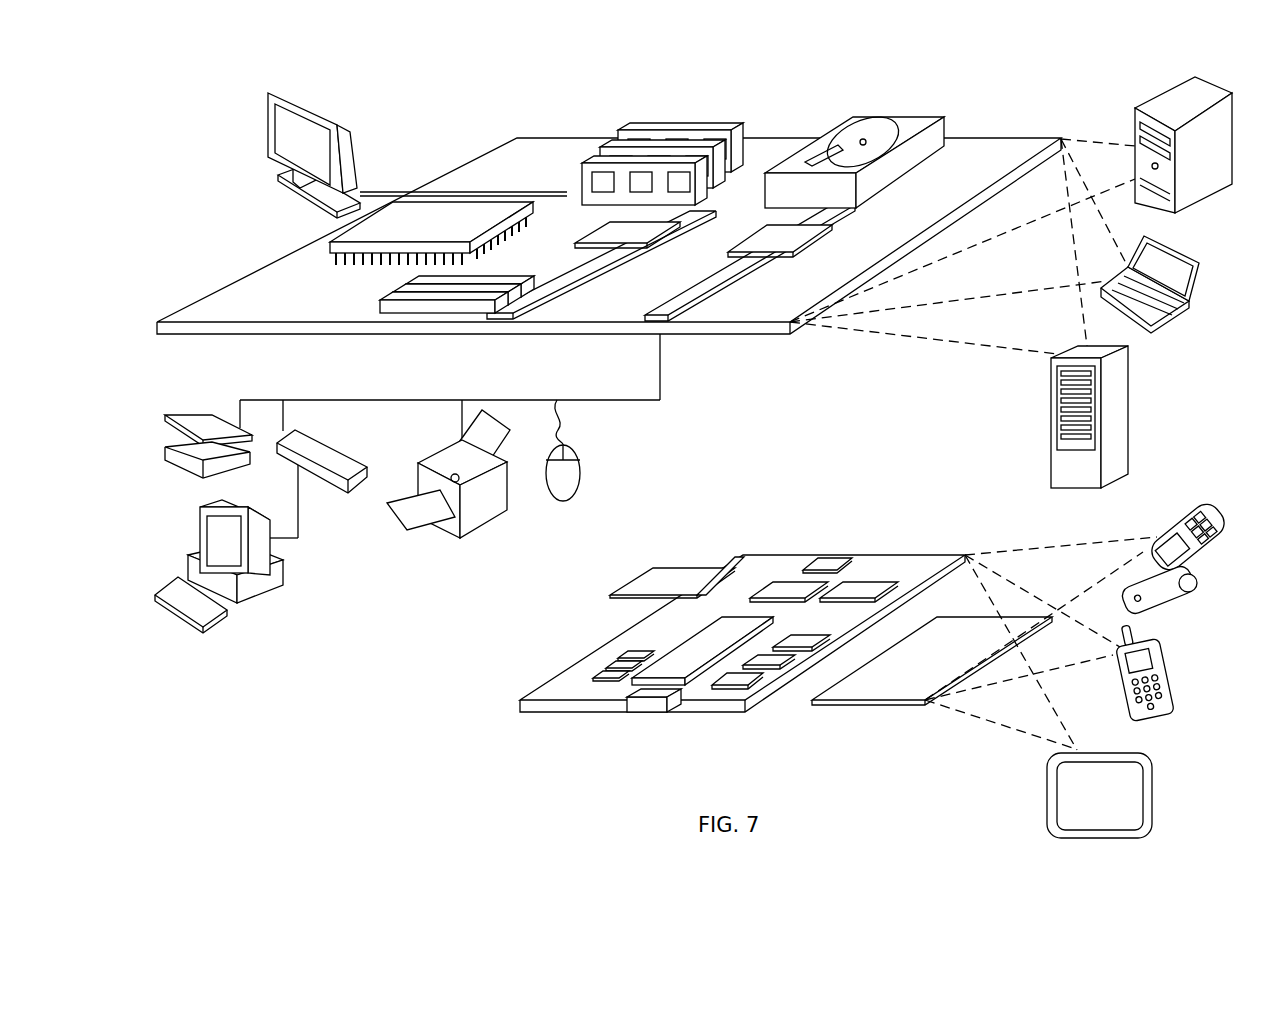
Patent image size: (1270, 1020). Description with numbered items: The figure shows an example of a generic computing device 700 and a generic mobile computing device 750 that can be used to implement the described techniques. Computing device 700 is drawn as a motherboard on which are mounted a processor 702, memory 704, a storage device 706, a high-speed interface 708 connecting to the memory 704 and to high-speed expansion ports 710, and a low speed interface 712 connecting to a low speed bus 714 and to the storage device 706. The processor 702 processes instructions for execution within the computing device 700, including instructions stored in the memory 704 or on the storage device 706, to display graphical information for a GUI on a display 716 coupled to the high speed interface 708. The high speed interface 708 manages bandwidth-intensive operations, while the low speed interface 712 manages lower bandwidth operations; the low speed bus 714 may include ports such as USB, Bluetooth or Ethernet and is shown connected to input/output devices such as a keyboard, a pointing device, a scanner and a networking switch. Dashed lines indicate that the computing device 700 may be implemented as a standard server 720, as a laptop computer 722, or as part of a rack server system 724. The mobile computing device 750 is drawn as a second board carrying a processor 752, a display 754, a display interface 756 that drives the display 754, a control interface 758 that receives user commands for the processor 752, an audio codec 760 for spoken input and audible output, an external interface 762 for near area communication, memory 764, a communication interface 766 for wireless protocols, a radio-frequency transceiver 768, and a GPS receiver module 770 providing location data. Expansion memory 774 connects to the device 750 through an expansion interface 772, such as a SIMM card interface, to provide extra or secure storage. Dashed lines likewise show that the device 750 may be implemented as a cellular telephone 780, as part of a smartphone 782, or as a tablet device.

The computing device 700 is at (446, 106).
The processor 702 is at (303, 248).
The memory 704 is at (643, 131).
The storage device 706 is at (838, 116).
The high-speed interface 708 is at (606, 232).
The high-speed expansion ports 710 is at (390, 298).
The low speed interface 712 is at (763, 233).
The low speed bus 714 is at (673, 327).
The display 716 is at (272, 93).
The standard server 720 is at (1135, 123).
The laptop computer 722 is at (1197, 256).
The rack server system 724 is at (1052, 442).
The mobile computer device 750 is at (493, 717).
The processor 752 is at (681, 672).
The display 754 is at (895, 690).
The display interface 756 is at (747, 680).
The control interface 758 is at (777, 660).
The audio codec 760 is at (800, 641).
The external interface 762 is at (647, 703).
The memory 764 is at (602, 665).
The communication interface 766 is at (789, 588).
The transceiver 768 is at (860, 588).
The GPS receiver module 770 is at (835, 556).
The expansion interface 772 is at (728, 563).
The expansion memory 774 is at (655, 568).
The cellular telephone 780 is at (1175, 518).
The smartphone 782 is at (1122, 678).